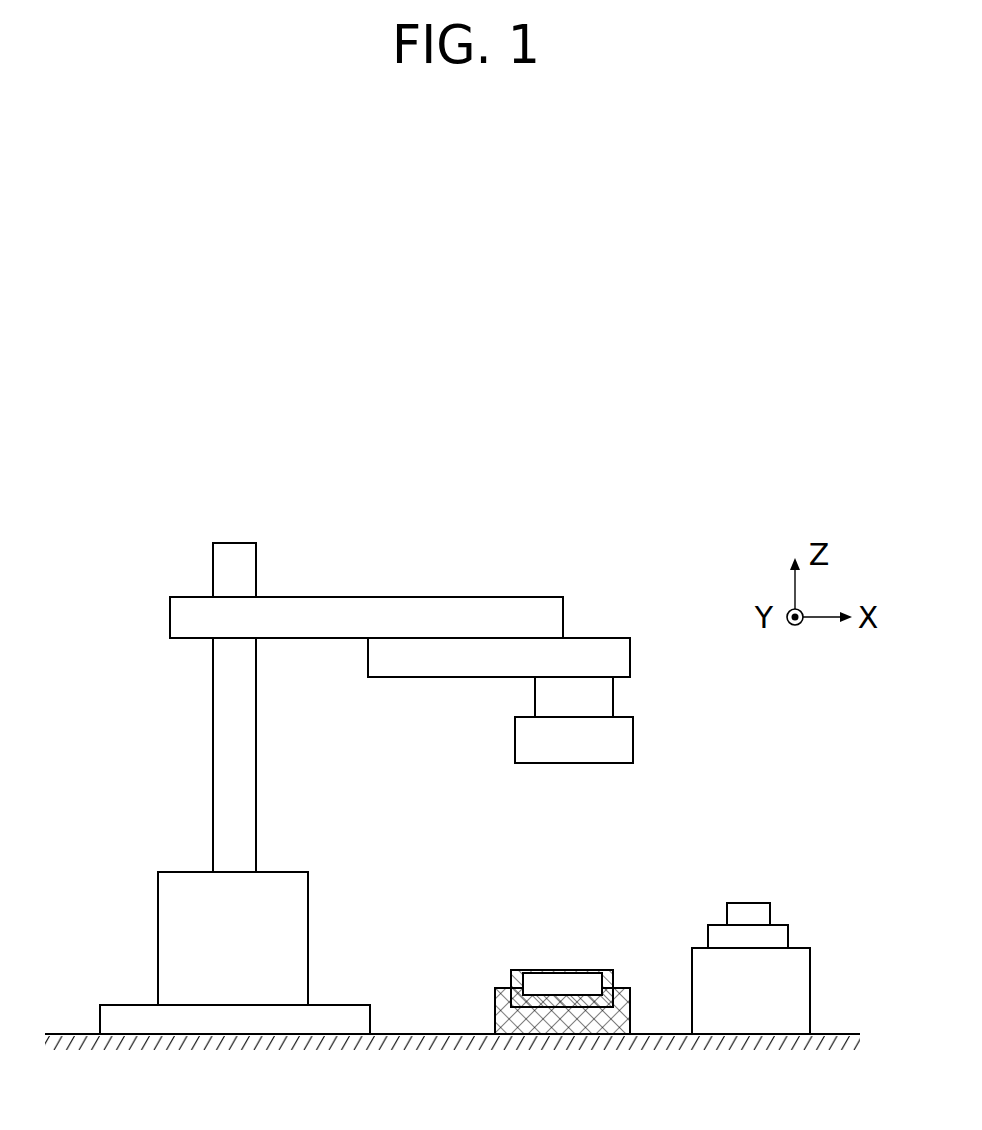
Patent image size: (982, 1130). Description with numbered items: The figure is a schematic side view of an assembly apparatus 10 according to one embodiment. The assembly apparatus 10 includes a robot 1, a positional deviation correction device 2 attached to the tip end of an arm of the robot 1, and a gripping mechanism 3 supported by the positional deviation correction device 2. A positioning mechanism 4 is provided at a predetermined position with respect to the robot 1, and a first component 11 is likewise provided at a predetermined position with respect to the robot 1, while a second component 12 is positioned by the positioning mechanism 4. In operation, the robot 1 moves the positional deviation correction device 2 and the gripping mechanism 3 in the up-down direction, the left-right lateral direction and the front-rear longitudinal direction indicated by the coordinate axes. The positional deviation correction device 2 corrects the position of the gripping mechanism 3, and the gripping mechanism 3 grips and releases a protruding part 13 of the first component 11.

The assembly apparatus 10 is at (468, 497).
The robot 1 is at (208, 564).
The positional deviation correction device 2 is at (616, 696).
The gripping mechanism 3 is at (634, 741).
The positioning mechanism 4 is at (495, 1000).
The second component 12 is at (611, 970).
The first component 11 is at (778, 925).
The protruding part 13 is at (748, 903).